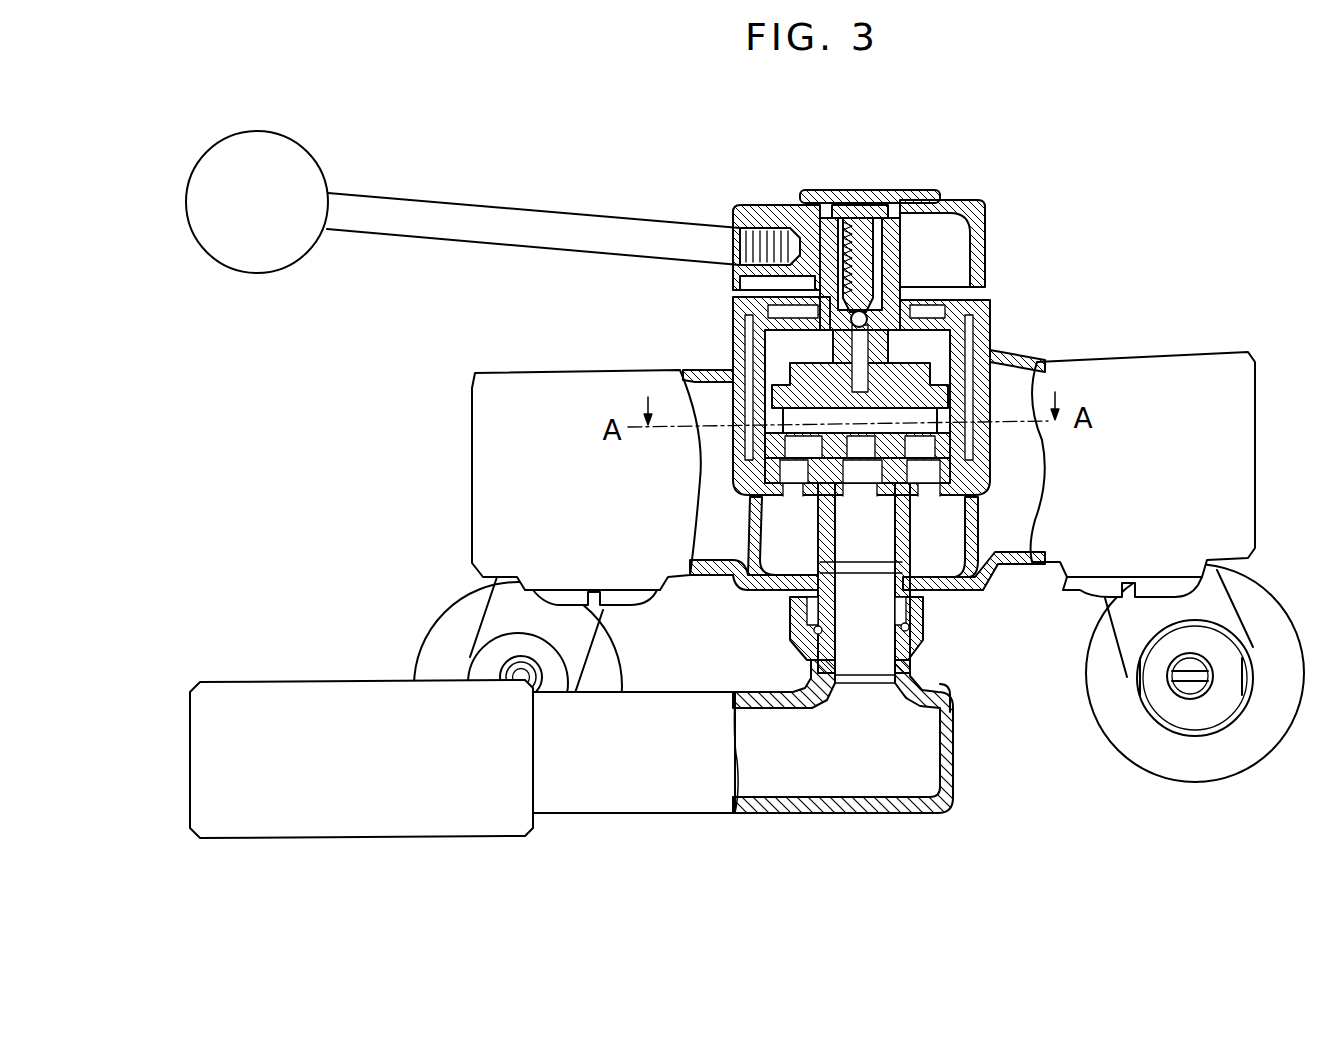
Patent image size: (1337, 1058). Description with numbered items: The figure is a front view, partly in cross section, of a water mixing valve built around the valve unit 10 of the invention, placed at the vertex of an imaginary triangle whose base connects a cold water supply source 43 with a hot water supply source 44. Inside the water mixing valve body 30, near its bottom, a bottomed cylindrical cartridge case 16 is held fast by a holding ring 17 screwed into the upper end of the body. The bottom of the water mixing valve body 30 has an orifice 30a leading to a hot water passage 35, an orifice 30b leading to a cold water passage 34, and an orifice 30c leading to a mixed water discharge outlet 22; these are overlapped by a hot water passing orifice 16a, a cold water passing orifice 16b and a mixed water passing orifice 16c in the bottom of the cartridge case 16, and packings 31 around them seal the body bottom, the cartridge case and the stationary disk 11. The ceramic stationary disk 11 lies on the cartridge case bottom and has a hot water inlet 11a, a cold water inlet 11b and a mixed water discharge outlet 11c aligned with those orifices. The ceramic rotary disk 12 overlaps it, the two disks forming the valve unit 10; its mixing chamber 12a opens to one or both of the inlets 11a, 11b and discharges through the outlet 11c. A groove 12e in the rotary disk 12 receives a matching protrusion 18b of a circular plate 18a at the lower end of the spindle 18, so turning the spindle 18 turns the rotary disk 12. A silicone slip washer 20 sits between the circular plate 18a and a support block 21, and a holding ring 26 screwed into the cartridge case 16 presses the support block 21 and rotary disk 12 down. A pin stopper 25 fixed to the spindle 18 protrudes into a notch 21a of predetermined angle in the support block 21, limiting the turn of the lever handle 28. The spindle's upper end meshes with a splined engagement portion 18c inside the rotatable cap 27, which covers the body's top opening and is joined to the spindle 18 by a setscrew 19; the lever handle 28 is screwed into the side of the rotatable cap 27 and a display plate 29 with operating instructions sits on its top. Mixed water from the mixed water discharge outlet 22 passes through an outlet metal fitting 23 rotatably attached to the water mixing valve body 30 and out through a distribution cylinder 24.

The valve unit 10 is at (990, 370).
The stationary disk 11 is at (985, 447).
The hot water inlet 11a is at (745, 458).
The cold water inlet 11b is at (985, 440).
The mixed water discharge outlet 11c is at (965, 478).
The rotary disk 12 is at (988, 340).
The mixing chamber 12a is at (950, 422).
The groove 12e is at (965, 335).
The cartridge case 16 is at (1045, 355).
The hot water passing orifice 16a is at (765, 503).
The cold water passing orifice 16b is at (975, 508).
The mixed water passing orifice 16c is at (945, 540).
The holding ring 17 is at (725, 302).
The spindle 18 is at (702, 207).
The circular plate 18a is at (760, 345).
The protrusion 18b is at (908, 278).
The engagement portion 18c is at (793, 200).
The setscrew 19 is at (852, 205).
The slip washer 20 is at (800, 355).
The support block 21 is at (1001, 201).
The notch 21a is at (945, 218).
The mixed water discharge outlet 22 is at (862, 555).
The outlet metal fitting 23 is at (657, 793).
The distribution cylinder 24 is at (358, 813).
The pin stopper 25 is at (750, 207).
The holding ring 26 is at (735, 310).
The rotatable cap 27 is at (938, 197).
The lever handle 28 is at (492, 222).
The display plate 29 is at (875, 190).
The water mixing valve body 30 is at (735, 462).
The orifice 30a is at (790, 503).
The orifice 30b is at (935, 500).
The orifice 30c is at (860, 497).
The packings 31 is at (770, 478).
The cold water passage 34 is at (1013, 540).
The hot water passage 35 is at (755, 580).
The cold water supply source 43 is at (1193, 740).
The hot water supply source 44 is at (460, 670).